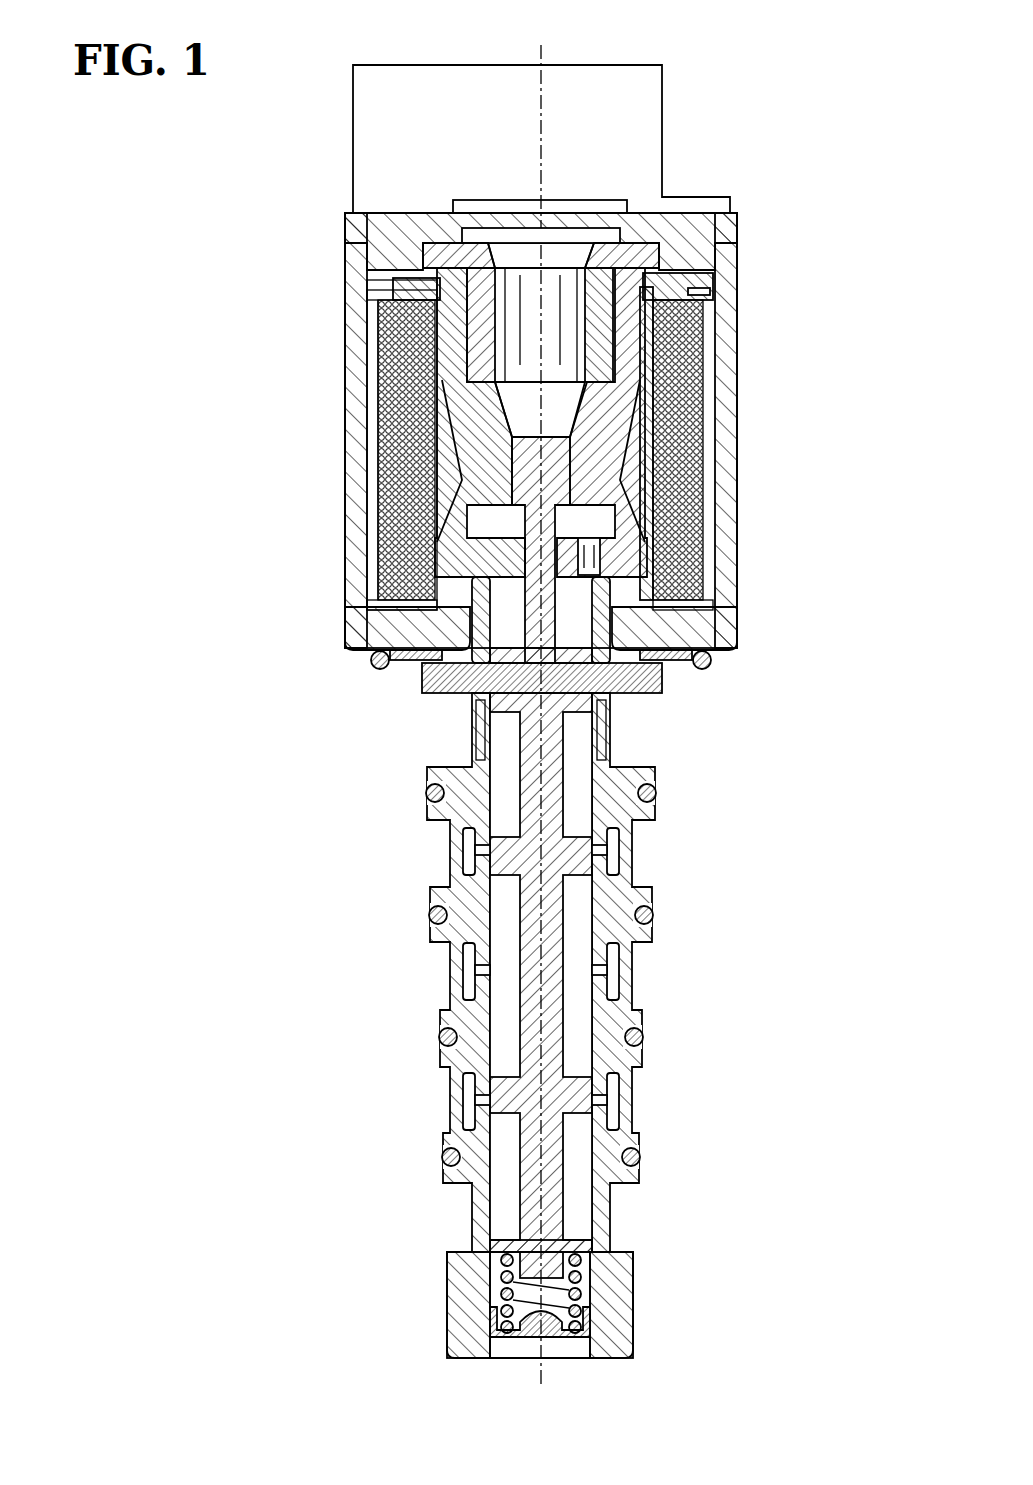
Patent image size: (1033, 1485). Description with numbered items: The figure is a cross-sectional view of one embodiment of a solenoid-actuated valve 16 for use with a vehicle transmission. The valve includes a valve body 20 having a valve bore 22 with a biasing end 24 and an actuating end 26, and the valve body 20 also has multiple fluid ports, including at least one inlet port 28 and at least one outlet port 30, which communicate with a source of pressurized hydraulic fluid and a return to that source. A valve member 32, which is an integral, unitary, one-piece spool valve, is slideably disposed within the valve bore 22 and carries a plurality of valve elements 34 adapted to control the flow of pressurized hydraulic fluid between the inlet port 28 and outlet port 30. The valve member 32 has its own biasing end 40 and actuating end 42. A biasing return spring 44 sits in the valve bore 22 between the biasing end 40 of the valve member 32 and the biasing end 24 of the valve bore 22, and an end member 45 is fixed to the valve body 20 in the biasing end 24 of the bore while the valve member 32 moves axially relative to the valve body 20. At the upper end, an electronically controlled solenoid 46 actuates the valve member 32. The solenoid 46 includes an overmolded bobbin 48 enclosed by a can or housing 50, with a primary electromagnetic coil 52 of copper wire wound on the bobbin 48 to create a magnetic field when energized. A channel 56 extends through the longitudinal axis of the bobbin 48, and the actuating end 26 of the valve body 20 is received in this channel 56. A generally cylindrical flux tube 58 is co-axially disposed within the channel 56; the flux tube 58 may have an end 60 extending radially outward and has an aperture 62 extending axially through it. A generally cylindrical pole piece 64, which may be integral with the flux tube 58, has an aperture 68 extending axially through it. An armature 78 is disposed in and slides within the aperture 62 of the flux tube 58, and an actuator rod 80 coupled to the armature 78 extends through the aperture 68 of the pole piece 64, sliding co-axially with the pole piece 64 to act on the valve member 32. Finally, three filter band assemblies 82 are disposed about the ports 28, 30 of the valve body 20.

The solenoid-actuated valve 16 is at (178, 208).
The valve body 20 is at (618, 1295).
The valve bore 22 is at (500, 895).
The biasing end 24 is at (580, 1350).
The actuating end 26 is at (608, 690).
The inlet port 28 is at (595, 1090).
The outlet port 30 is at (600, 973).
The valve member 32 is at (560, 867).
The valve elements 34 is at (500, 848).
The biasing end 40 is at (530, 1262).
The actuating end 42 is at (490, 672).
The biasing return spring 44 is at (515, 1290).
The end member 45 is at (520, 1340).
The electronically controlled solenoid 46 is at (335, 405).
The bobbin 48 is at (400, 305).
The housing 50 is at (352, 480).
The primary electromagnetic coil 52 is at (392, 350).
The channel 56 is at (628, 382).
The flux tube 58 is at (633, 262).
The end 60 is at (380, 228).
The aperture 62 is at (487, 290).
The pole piece 64 is at (628, 565).
The aperture 68 is at (575, 530).
The armature 78 is at (612, 343).
The actuator rod 80 is at (530, 600).
The filter band assembly 82 is at (636, 848).